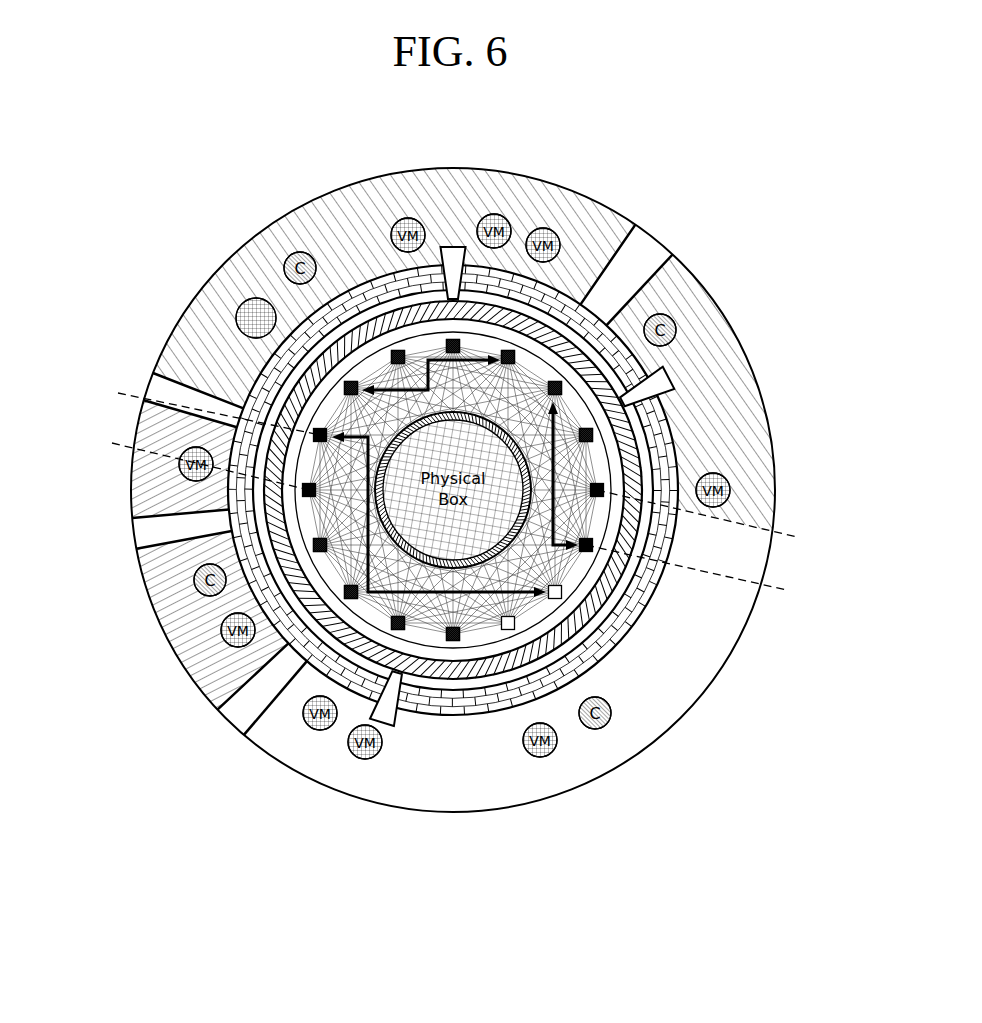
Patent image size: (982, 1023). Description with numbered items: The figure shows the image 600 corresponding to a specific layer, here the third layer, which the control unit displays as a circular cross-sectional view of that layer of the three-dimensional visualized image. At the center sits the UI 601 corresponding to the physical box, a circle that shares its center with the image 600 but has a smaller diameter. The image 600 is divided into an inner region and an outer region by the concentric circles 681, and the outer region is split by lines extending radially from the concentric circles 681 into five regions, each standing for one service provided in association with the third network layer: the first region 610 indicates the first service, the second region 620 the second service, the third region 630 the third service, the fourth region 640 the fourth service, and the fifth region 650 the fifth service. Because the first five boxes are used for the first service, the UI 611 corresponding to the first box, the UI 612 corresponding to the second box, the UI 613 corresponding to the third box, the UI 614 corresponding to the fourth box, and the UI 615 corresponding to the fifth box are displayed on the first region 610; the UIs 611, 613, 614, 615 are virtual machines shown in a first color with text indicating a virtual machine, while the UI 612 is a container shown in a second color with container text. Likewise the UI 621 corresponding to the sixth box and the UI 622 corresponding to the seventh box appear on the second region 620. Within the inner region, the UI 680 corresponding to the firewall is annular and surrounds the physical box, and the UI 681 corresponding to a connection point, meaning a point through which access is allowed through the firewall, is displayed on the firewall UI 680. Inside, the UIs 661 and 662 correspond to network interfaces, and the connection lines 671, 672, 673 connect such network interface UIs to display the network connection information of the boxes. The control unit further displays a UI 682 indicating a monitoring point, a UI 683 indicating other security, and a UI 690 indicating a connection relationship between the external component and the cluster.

The image corresponding to the third layer 600 is at (401, 812).
The UI corresponding to the physical box 601 is at (622, 330).
The first region 610 is at (394, 260).
The UI corresponding to the first box 611 is at (246, 302).
The UI corresponding to the second box 612 is at (292, 256).
The UI corresponding to the third box 613 is at (408, 218).
The UI corresponding to the fourth box 614 is at (494, 214).
The UI corresponding to the fifth box 615 is at (555, 238).
The second region 620 is at (726, 393).
The UI corresponding to the sixth box 621 is at (672, 322).
The UI corresponding to the seventh box 622 is at (728, 484).
The third region 630 is at (659, 725).
The fourth region 640 is at (183, 640).
The fifth region 650 is at (150, 474).
The UI corresponding to the network interface 661 is at (344, 388).
The UI corresponding to the network interface 662 is at (516, 358).
The connection line 671 is at (472, 352).
The connection line 672 is at (566, 549).
The connection line 673 is at (472, 596).
The UI corresponding to the firewall 680 is at (641, 604).
The concentric circle / UI corresponding to the connection point 681 is at (557, 693).
The UI indicating a monitoring point 682 is at (357, 690).
The UI indicating other security 683 is at (300, 522).
The UI indicating a connection relationship between the external component and the c 690 is at (773, 590).